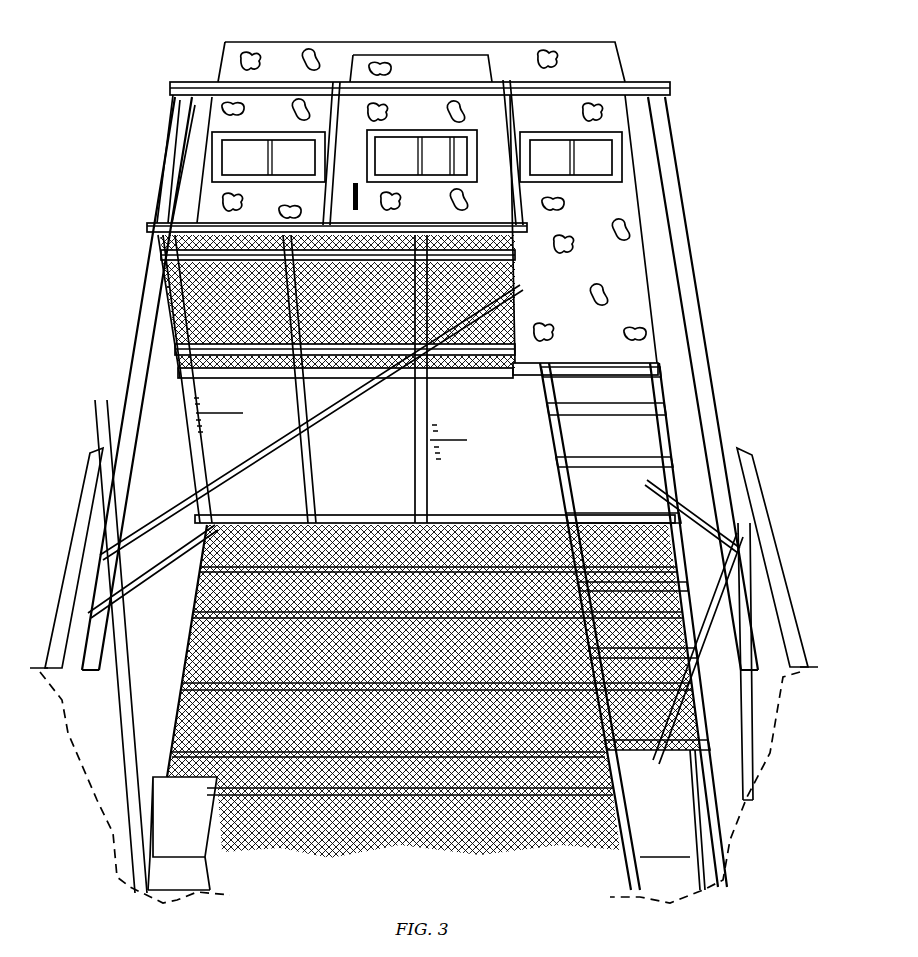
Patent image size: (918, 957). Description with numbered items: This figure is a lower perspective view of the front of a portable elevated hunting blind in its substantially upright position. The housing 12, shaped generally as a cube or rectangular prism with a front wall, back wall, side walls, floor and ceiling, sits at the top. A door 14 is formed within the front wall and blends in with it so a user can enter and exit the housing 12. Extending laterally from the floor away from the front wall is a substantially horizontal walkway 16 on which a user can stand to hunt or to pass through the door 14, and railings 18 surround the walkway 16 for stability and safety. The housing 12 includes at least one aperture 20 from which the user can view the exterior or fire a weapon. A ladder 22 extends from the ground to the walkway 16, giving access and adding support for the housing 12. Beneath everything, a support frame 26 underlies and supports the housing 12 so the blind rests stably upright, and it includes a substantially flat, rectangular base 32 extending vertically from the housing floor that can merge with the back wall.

The housing 12 is at (588, 57).
The door 14 is at (425, 74).
The walkway 16 is at (193, 303).
The railings 18 is at (165, 170).
The aperture 20 is at (243, 152).
The ladder 22 is at (665, 423).
The support frame 26 is at (130, 368).
The base 32 is at (338, 790).